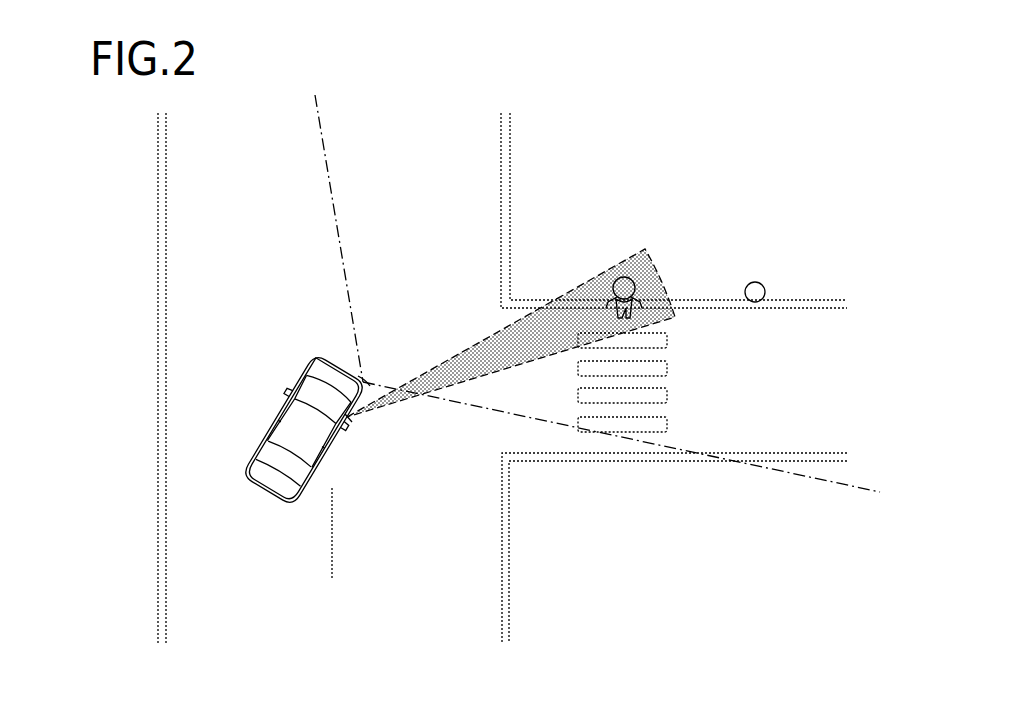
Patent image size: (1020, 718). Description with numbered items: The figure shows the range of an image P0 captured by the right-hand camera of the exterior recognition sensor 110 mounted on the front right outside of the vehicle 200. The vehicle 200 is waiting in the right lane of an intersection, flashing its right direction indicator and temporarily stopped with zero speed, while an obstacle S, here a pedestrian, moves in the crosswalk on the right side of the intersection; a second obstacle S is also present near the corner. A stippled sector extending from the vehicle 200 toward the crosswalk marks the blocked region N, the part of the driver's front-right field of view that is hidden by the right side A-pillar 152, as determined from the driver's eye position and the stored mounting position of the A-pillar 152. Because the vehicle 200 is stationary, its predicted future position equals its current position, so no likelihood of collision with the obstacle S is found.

The exterior recognition sensor 110 is at (372, 372).
The right side A-pillar 152 is at (352, 420).
The vehicle 200 is at (264, 408).
The blocked region N is at (556, 325).
The obstacle S is at (645, 276).
The image P0 is at (478, 183).